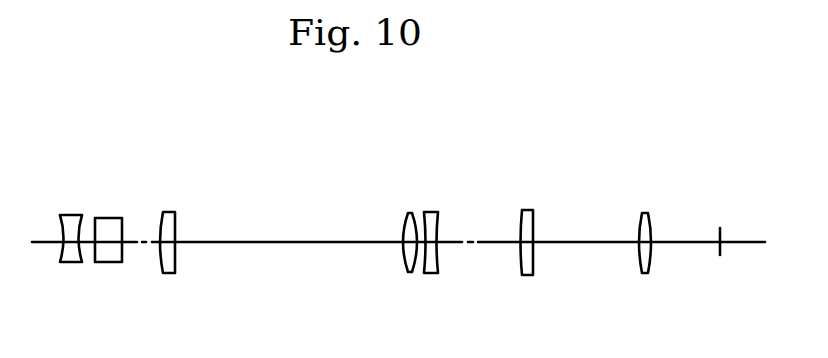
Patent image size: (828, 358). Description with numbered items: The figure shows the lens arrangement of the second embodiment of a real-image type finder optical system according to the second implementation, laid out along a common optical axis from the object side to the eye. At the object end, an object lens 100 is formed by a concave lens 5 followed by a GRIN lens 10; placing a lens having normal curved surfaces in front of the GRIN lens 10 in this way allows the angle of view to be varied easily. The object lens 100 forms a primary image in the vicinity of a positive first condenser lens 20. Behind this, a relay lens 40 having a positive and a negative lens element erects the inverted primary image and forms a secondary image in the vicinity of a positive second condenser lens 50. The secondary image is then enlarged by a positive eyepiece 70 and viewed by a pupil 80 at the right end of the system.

The concave lens 5 is at (70, 216).
The GRIN lens 10 is at (108, 218).
The first condenser lens 20 is at (163, 224).
The relay lens 40 is at (448, 192).
The second condenser lens 50 is at (523, 230).
The eyepiece 70 is at (650, 262).
The pupil 80 is at (720, 230).
The object lens 100 is at (171, 230).